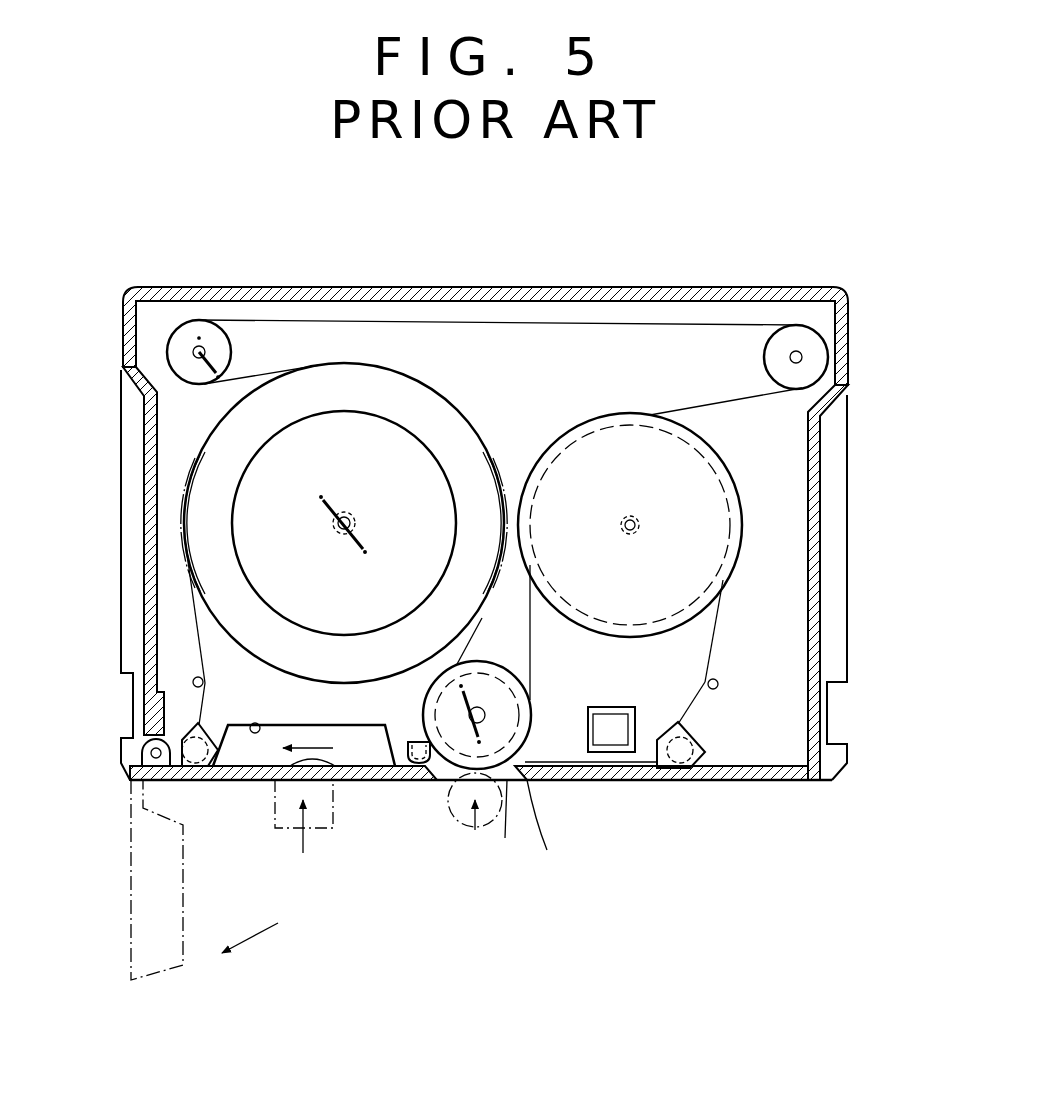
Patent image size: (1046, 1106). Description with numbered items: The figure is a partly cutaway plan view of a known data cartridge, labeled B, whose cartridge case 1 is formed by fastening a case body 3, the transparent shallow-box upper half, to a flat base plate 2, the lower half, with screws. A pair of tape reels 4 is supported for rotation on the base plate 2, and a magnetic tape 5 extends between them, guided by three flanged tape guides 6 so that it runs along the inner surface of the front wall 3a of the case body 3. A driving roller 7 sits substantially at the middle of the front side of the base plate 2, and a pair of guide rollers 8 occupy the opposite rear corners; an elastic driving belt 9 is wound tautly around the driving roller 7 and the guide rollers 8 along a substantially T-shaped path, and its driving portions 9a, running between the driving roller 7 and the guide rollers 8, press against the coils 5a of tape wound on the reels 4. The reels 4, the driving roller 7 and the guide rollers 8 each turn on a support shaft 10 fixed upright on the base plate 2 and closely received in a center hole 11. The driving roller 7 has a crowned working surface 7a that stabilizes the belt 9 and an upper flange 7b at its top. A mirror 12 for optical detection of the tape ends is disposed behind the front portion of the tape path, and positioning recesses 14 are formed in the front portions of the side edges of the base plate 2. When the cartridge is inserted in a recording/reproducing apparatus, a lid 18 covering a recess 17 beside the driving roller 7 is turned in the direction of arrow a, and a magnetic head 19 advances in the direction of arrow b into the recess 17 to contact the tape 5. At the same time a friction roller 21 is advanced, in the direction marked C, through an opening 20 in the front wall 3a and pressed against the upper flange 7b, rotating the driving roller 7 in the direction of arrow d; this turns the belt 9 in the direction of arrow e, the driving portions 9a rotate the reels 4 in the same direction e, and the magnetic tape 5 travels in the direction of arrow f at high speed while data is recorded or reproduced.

The cartridge case 1 is at (471, 268).
The base plate 2 is at (525, 330).
The case body 3 is at (430, 287).
The front wall 3a is at (768, 782).
The tape reel 4 is at (240, 497).
The magnetic tape 5 is at (203, 618).
The coil of the magnetic tape 5a is at (394, 385).
The flanged tape guide 6 is at (200, 742).
The driving roller 7 is at (493, 769).
The crowned working surface 7a is at (495, 740).
The upper flange 7b is at (513, 824).
The guide roller 8 is at (172, 345).
The driving belt 9 is at (600, 322).
The driving portion 9a is at (500, 612).
The support shaft 10 is at (199, 345).
The center hole 11 is at (212, 360).
The mirror 12 is at (617, 740).
The positioning recess 14 is at (128, 675).
The recess 17 is at (255, 722).
The lid 18 is at (237, 780).
The magnetic head 19 is at (333, 812).
The opening 20 is at (450, 803).
The friction roller 21 is at (457, 832).
The cassette B is at (655, 200).
The capstan drive direction C is at (478, 832).
The arrow a is at (252, 945).
The arrow b is at (303, 845).
The arrow d is at (466, 688).
The arrow e is at (440, 373).
The arrow f is at (318, 745).